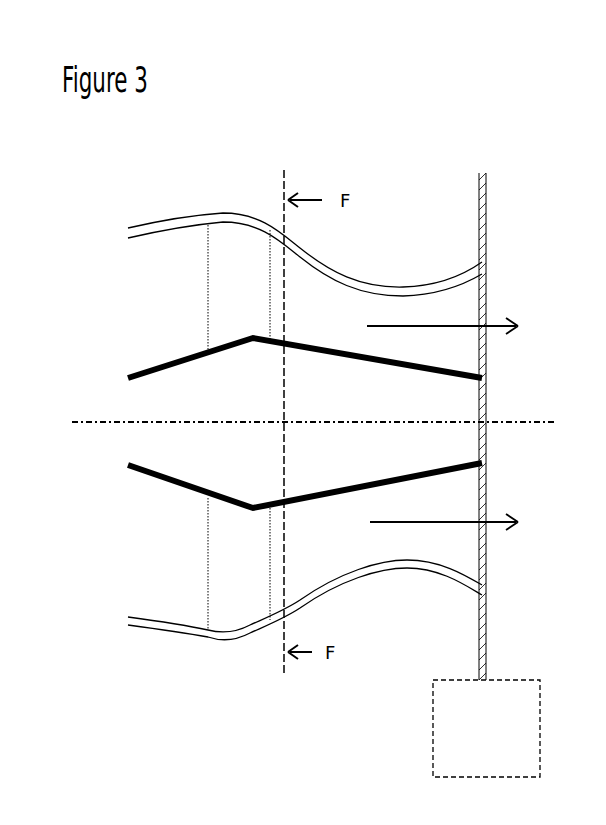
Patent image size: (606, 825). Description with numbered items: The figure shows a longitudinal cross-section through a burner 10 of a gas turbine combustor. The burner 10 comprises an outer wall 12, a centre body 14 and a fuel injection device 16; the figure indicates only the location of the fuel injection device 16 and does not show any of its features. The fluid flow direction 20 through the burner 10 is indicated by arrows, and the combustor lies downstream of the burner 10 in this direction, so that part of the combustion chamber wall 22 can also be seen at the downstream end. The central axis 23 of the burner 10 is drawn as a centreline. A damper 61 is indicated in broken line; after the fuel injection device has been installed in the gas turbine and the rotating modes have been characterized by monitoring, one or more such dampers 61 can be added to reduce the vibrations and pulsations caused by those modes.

The burner 10 is at (354, 118).
The outer wall 12 is at (417, 290).
The centre body 14 is at (358, 452).
The fuel injection device 16 is at (235, 287).
The fluid flow direction 20 is at (493, 323).
The combustion chamber wall 22 is at (483, 247).
The central axis 23 is at (535, 427).
The damper 61 is at (474, 716).